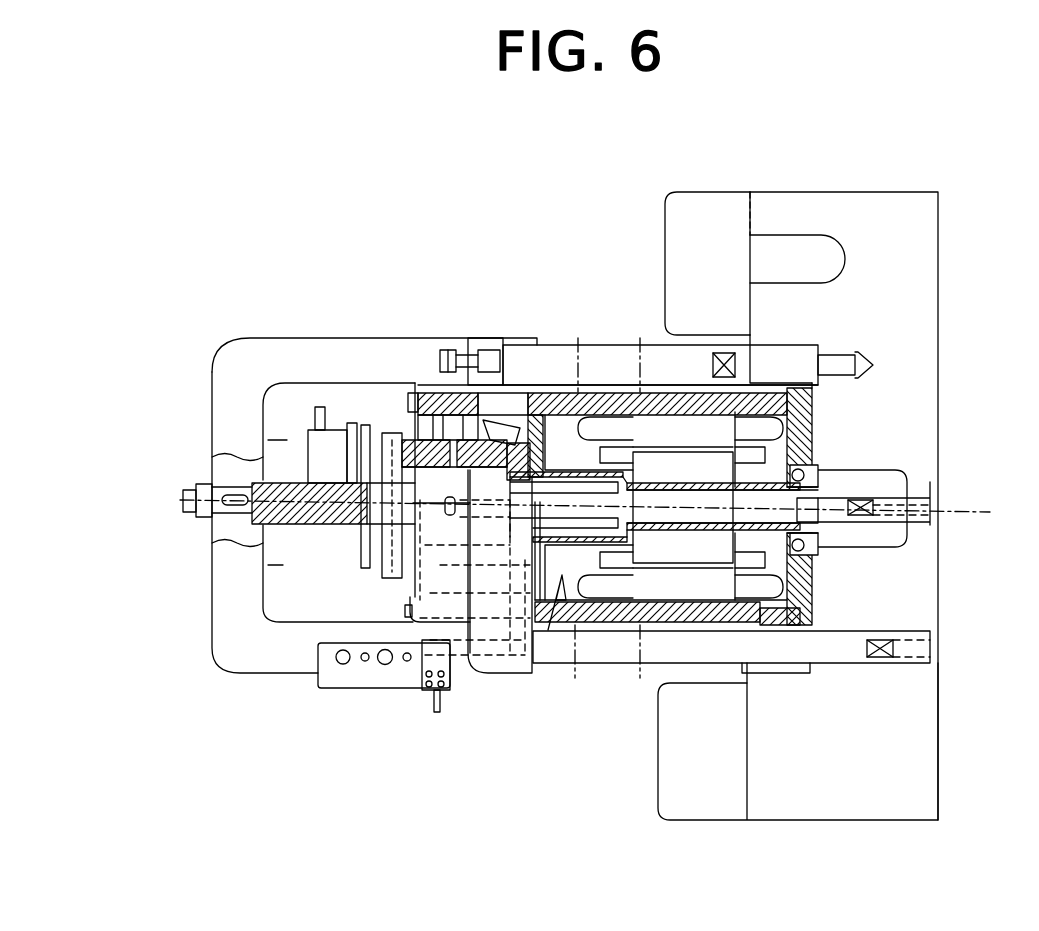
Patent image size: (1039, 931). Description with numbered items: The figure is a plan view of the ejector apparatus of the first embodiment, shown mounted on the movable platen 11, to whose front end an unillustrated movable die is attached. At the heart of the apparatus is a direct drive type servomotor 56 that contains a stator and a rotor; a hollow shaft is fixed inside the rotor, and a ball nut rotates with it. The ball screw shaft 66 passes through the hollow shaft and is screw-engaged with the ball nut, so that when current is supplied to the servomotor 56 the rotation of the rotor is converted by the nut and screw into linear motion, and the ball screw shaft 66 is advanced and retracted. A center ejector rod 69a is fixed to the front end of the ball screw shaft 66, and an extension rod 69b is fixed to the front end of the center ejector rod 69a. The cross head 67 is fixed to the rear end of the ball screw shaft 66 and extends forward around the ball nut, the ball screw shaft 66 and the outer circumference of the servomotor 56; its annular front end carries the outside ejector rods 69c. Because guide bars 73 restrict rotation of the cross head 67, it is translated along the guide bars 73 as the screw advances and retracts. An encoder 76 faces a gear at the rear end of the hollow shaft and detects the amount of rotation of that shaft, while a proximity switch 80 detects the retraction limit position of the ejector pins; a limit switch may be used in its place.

The movable platen 11 is at (880, 207).
The servomotor 56 is at (545, 630).
The ball screw shaft 66 is at (307, 527).
The cross head 67 is at (316, 352).
The center ejector rod 69a is at (808, 448).
The extension rod 69b is at (764, 498).
The outside ejector rods 69c is at (840, 653).
The guide bars 73 is at (563, 343).
The encoder 76 is at (308, 432).
The proximity switch 80 is at (425, 652).